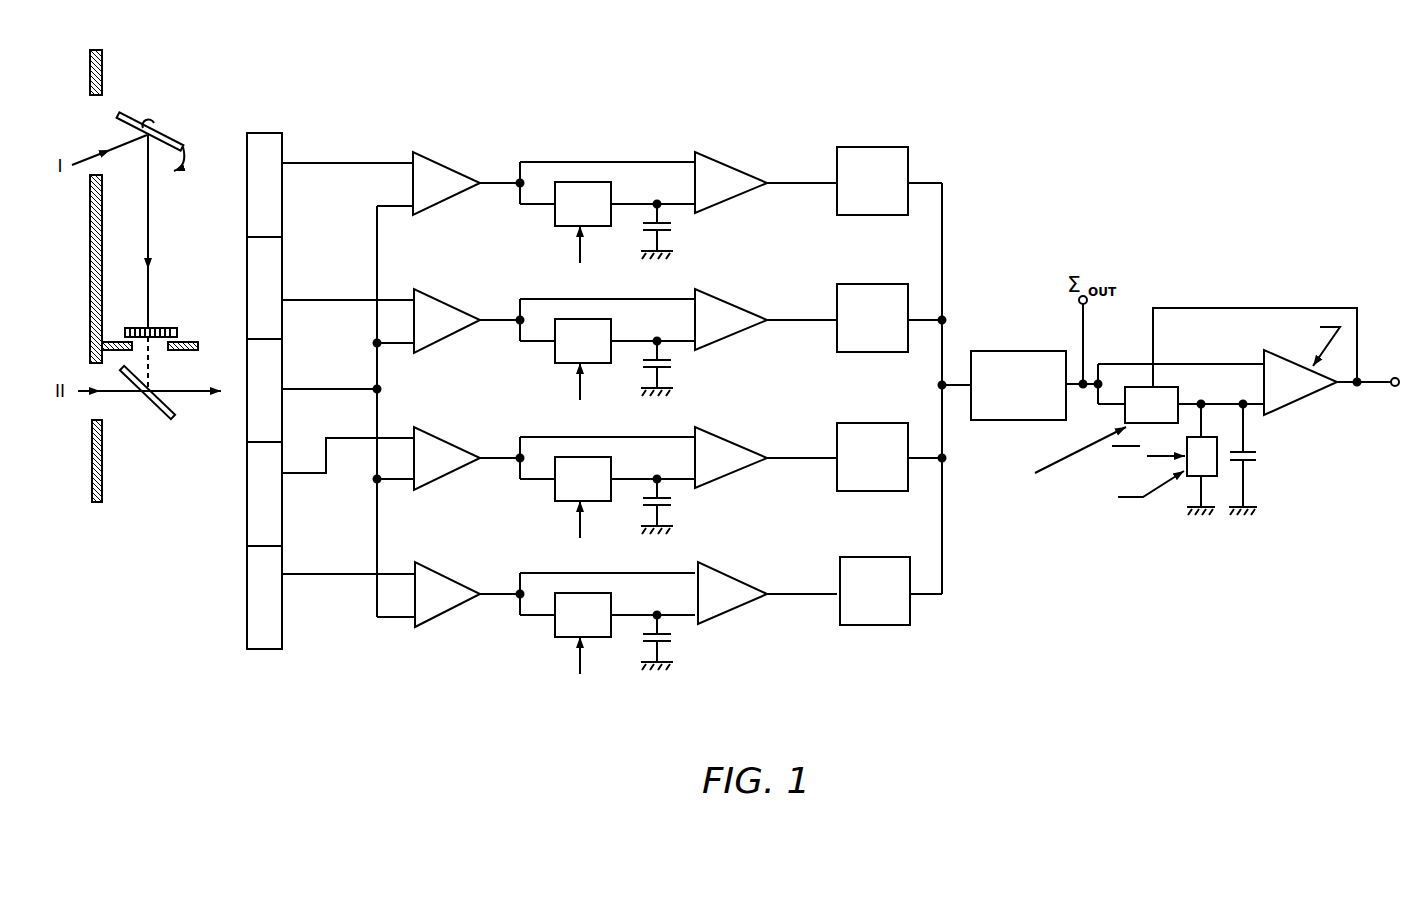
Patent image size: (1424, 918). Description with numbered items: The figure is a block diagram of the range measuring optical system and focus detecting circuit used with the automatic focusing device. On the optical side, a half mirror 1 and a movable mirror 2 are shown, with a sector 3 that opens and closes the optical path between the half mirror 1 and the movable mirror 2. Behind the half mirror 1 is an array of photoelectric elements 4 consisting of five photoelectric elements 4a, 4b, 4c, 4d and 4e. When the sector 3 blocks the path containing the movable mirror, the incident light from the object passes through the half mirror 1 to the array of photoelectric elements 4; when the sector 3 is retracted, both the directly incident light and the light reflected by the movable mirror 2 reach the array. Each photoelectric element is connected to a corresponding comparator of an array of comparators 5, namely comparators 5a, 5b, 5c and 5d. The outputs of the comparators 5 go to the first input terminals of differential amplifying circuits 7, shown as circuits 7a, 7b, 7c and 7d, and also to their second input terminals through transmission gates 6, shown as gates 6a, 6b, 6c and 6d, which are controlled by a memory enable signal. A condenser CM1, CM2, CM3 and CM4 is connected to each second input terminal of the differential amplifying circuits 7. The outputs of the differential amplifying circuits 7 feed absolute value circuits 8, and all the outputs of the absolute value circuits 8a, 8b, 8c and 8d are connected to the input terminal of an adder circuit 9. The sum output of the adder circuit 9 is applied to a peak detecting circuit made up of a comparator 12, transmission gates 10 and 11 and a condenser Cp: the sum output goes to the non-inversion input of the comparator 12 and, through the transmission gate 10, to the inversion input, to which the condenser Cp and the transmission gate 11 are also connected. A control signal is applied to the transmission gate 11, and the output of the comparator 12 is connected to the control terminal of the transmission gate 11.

The half mirror 1 is at (163, 416).
The movable mirror 2 is at (140, 114).
The sector 3 is at (165, 328).
The array of photoelectric elements 4 is at (263, 133).
The photoelectric element 4a is at (283, 210).
The photoelectric element 4b is at (283, 265).
The photoelectric element 4c is at (283, 355).
The photoelectric element 4d is at (283, 510).
The photoelectric element 4e is at (283, 615).
The array of comparators 5 is at (441, 152).
The comparator 5a is at (436, 199).
The comparator 5b is at (436, 336).
The comparator 5c is at (436, 474).
The comparator 5d is at (436, 610).
The transmission gates 6 is at (575, 160).
The transmission gate 6a is at (555, 211).
The transmission gate 6b is at (555, 348).
The transmission gate 6c is at (555, 486).
The transmission gate 6d is at (555, 622).
The differential amplifying circuits 7 is at (774, 122).
The differential amplifying circuit 7a is at (733, 193).
The differential amplifying circuit 7b is at (733, 330).
The differential amplifying circuit 7c is at (733, 468).
The differential amplifying circuit 7d is at (735, 604).
The absolute value circuits 8 is at (870, 146).
The absolute value circuit 8a is at (871, 210).
The absolute value circuit 8b is at (871, 347).
The absolute value circuit 8c is at (871, 486).
The absolute value circuit 8d is at (874, 620).
The adder circuit 9 is at (1025, 351).
The transmission gate 10 is at (1176, 396).
The transmission gate 11 is at (1196, 472).
The comparator 12 is at (1305, 390).
The condenser CM1 is at (673, 228).
The condenser CM2 is at (673, 365).
The condenser CM3 is at (673, 503).
The condenser CM4 is at (673, 639).
The condenser Cp is at (1265, 456).